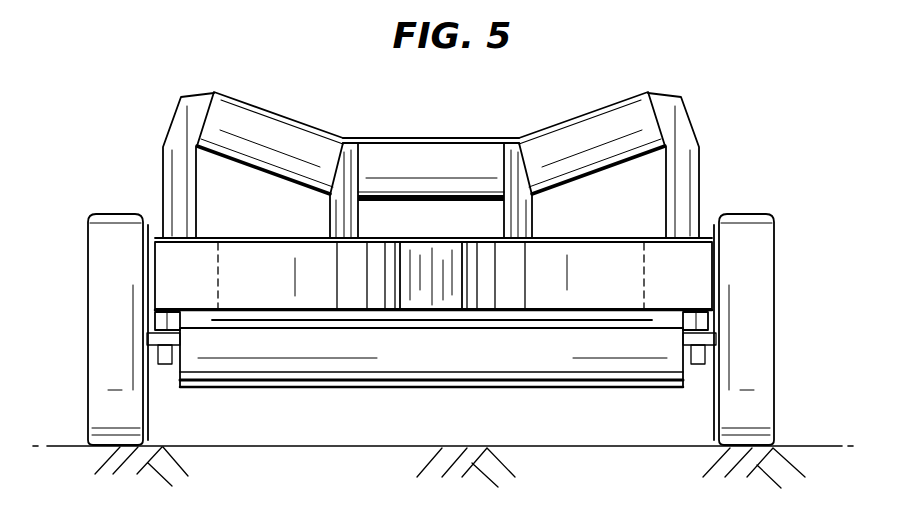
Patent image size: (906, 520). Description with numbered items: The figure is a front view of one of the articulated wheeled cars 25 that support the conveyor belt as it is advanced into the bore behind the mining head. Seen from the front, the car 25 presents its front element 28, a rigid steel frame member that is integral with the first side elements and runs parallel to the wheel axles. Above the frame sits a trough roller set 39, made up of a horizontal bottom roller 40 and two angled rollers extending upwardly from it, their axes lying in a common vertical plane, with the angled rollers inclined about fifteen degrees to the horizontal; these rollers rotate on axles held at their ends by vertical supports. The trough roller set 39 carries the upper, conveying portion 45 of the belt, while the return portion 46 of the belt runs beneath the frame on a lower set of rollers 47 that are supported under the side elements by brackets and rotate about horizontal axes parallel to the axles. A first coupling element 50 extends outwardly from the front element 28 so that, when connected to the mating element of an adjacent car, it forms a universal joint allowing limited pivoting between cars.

The articulated wheeled car 25 is at (730, 150).
The front element 28 is at (696, 280).
The first set of rollers 39 is at (204, 96).
The bottom roller 40 is at (443, 175).
The upper conveying portion 45 is at (330, 135).
The return portion 46 is at (480, 315).
The lower set of rollers 47 is at (299, 368).
The first coupling element 50 is at (412, 297).